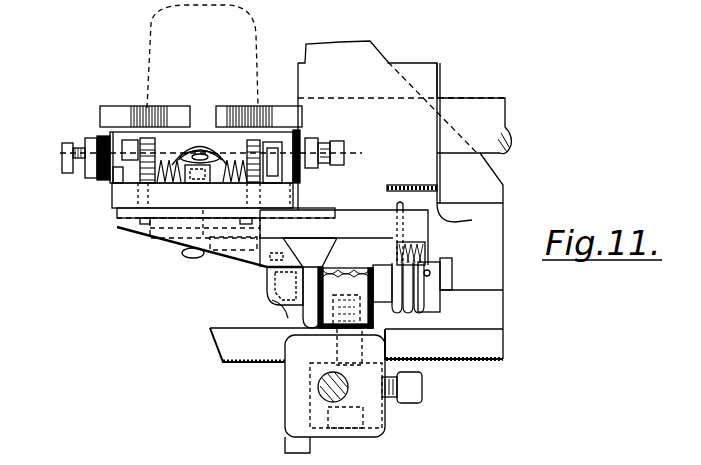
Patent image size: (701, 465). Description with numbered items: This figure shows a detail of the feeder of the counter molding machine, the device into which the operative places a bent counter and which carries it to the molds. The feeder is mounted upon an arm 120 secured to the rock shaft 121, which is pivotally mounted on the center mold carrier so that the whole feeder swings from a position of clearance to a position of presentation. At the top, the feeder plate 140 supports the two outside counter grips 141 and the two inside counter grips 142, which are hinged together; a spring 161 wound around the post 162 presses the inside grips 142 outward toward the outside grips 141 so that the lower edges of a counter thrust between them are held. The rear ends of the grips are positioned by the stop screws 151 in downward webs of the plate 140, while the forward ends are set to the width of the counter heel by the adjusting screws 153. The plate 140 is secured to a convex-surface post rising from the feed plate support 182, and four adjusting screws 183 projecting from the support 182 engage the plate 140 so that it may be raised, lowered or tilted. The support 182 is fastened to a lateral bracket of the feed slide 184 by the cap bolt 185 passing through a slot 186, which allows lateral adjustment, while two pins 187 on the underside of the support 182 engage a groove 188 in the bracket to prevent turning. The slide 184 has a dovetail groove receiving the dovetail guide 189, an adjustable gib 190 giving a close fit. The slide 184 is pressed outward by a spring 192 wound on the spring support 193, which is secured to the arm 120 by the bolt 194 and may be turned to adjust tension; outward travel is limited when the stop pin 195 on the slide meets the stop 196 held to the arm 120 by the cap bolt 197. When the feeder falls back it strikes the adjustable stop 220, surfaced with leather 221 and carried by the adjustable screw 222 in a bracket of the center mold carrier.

The rock shaft 121 is at (524, 91).
The arm 120 is at (385, 188).
The feed slide 184 is at (495, 207).
The outside counter grips 141 is at (134, 86).
The inside counter grips 142 is at (213, 66).
The post 162 is at (247, 107).
The feeder plate 140 is at (110, 128).
The adjusting screws 153 is at (82, 146).
The stop screws 151 is at (86, 175).
The spring 161 is at (231, 101).
The adjusting screws 183 is at (242, 185).
The feed plate support 182 is at (118, 193).
The pins 187 is at (117, 210).
The groove 188 is at (128, 220).
The slot 186 is at (190, 248).
The cap bolt 185 is at (217, 288).
The stop pin 195 is at (277, 259).
The stop 196 is at (268, 292).
The cap bolt 197 is at (272, 307).
The dovetail guide 189 is at (370, 235).
The adjustable gib 190 is at (391, 248).
The adjustable stop 220 is at (364, 308).
The spring 192 is at (495, 330).
The spring support 193 is at (497, 254).
The bolt 194 is at (505, 273).
The leather 221 is at (312, 312).
The adjustable screw 222 is at (452, 440).